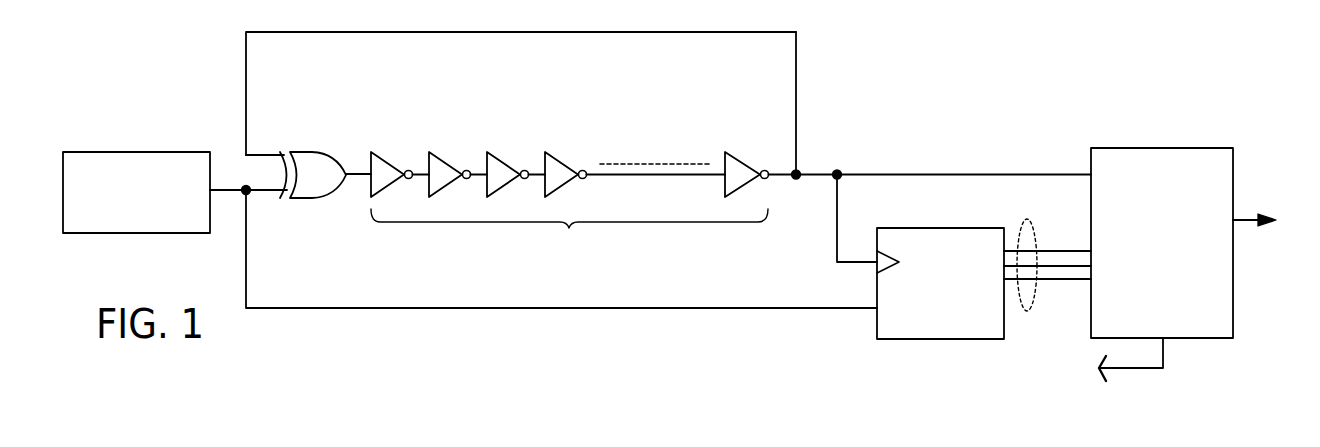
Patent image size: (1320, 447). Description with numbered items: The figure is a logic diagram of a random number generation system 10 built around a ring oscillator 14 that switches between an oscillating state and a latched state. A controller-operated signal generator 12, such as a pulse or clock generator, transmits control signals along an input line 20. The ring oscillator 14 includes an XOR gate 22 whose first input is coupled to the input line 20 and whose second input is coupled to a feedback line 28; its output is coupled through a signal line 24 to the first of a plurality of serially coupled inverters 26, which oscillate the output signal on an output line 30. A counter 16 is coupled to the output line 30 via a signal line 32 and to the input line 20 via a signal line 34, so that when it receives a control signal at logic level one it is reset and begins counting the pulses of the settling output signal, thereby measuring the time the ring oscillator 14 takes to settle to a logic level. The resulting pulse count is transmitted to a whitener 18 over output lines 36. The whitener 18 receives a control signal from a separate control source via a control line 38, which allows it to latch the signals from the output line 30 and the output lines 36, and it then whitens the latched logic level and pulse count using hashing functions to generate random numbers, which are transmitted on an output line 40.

The system 10 is at (980, 76).
The signal generator 12 is at (100, 152).
The ring oscillator 14 is at (800, 101).
The counter 16 is at (927, 228).
The whitener 18 is at (1133, 148).
The input line 20 is at (227, 193).
The XOR gate 22 is at (293, 200).
The signal line 24 is at (353, 175).
The inverters 26 is at (574, 188).
The feedback line 28 is at (526, 32).
The output line 30 is at (930, 174).
The signal line 32 is at (837, 224).
The signal line 34 is at (530, 308).
The output lines 36 is at (1027, 312).
The control line 38 is at (1150, 370).
The output line 40 is at (1245, 222).